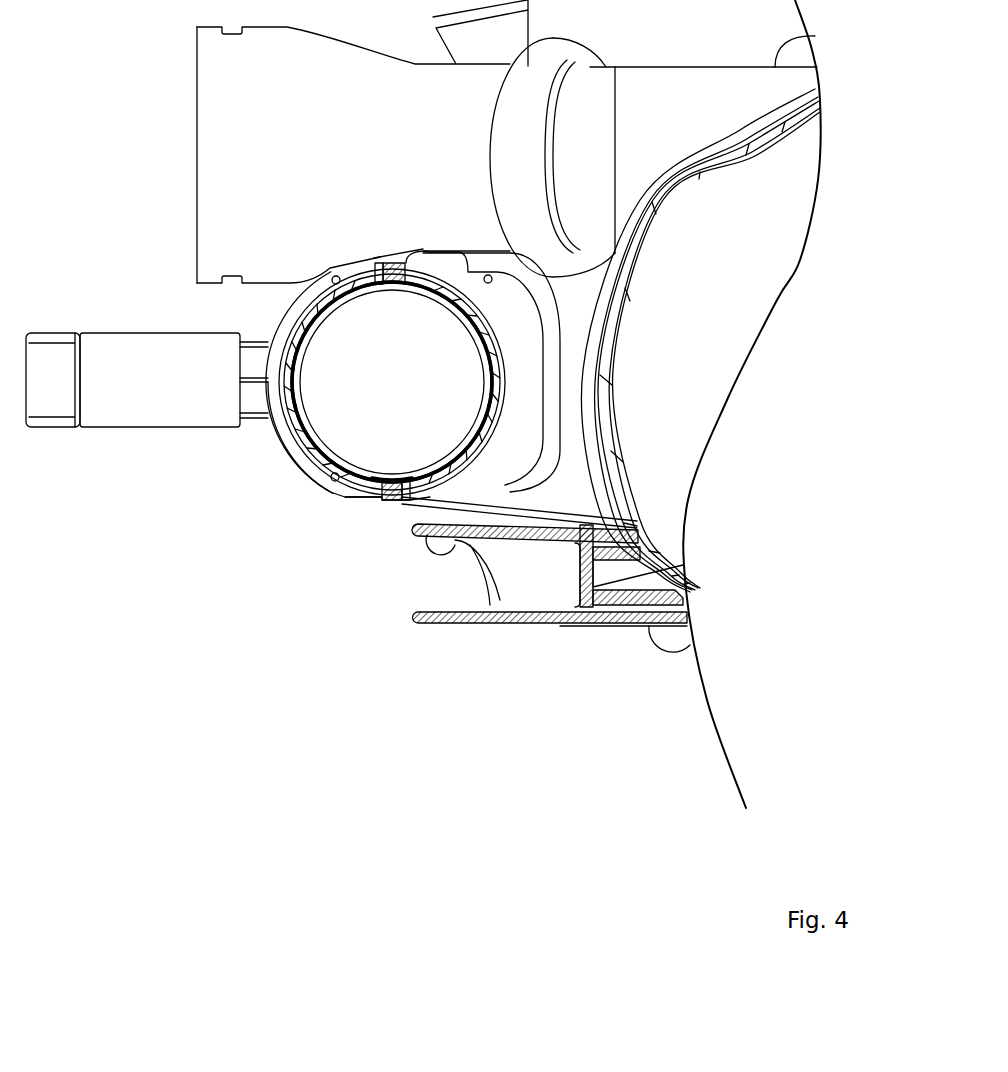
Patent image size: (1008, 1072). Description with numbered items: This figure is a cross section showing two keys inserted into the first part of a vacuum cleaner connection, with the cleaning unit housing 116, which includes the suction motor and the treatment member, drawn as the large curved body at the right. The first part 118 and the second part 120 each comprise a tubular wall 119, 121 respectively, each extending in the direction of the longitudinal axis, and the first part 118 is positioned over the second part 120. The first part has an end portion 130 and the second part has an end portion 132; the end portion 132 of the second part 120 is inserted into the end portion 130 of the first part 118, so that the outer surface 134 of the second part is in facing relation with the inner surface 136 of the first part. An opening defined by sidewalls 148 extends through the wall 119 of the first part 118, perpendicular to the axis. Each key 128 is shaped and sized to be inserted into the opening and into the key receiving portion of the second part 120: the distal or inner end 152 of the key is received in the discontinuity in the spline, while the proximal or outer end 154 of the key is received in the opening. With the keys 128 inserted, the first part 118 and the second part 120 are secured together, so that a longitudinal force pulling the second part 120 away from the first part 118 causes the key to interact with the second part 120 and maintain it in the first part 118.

The cleaning unit housing 116 is at (716, 332).
The first part 118 is at (335, 476).
The wall 119 is at (492, 333).
The second part 120 is at (298, 389).
The wall 121 is at (490, 375).
The key 128 is at (384, 286).
The end portion 130 is at (470, 318).
The end portion 132 is at (411, 290).
The outer surface 134 is at (299, 348).
The inner surface 136 is at (282, 325).
The sidewalls 148 is at (393, 477).
The inner end 152 is at (391, 480).
The outer end 154 is at (400, 505).